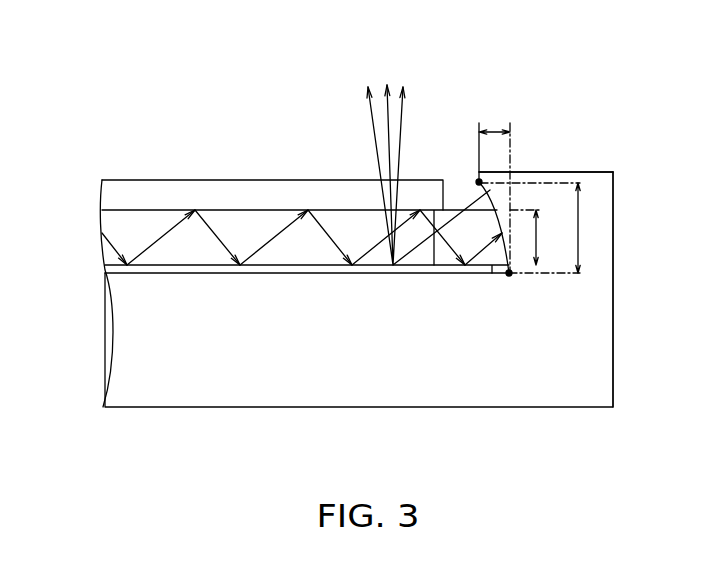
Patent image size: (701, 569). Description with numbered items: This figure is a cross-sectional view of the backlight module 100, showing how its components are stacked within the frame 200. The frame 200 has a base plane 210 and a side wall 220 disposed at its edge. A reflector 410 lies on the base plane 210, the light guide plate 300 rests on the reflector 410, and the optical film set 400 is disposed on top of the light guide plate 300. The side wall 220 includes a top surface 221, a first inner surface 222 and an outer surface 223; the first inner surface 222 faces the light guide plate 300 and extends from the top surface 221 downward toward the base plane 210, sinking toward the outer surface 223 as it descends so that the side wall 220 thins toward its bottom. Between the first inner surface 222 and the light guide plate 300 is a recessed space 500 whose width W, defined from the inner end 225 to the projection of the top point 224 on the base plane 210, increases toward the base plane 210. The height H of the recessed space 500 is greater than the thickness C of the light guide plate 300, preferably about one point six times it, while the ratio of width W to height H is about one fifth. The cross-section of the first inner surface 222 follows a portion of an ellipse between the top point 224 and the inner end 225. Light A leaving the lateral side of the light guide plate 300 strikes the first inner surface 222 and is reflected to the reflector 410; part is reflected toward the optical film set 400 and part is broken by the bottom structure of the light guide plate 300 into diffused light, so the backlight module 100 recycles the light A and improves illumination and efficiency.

The backlight module 100 is at (115, 47).
The frame 200 is at (605, 328).
The base plane 210 is at (498, 277).
The side wall 220 is at (557, 177).
The top surface 221 is at (595, 171).
The first inner surface 222 is at (500, 202).
The outer surface 223 is at (613, 220).
The top point 224 is at (479, 182).
The inner end 225 is at (510, 274).
The light guide plate 300 is at (113, 220).
The optical film set 400 is at (117, 197).
The reflector 410 is at (113, 269).
The recessed space 500 is at (467, 194).
The light A is at (100, 247).
The width of the recessed space W is at (494, 138).
The thickness of the light guide plate C is at (532, 237).
The height of the recessed space H is at (539, 228).